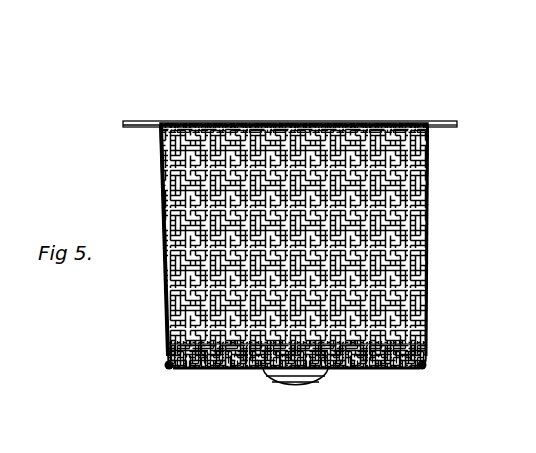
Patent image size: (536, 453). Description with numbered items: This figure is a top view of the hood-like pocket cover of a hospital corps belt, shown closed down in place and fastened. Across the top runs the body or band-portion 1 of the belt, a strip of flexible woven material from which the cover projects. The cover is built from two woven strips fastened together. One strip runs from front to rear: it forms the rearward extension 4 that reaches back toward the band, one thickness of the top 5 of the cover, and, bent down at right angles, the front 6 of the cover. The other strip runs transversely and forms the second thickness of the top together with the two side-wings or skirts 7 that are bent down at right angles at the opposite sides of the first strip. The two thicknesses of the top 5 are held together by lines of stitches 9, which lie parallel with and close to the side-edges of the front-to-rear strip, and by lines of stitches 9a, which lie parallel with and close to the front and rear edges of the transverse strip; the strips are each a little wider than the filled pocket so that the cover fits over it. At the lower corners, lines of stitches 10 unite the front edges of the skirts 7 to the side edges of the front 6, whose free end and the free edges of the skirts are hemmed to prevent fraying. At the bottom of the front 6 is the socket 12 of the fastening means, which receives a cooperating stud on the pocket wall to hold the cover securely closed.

The body or band-portion 1 is at (436, 116).
The rearward extension 4 is at (421, 121).
The top of the cover 5 is at (422, 286).
The front of the cover 6 is at (227, 365).
The side-portions, wings, or skirts 7 is at (154, 183).
The lines of stitches 9 is at (158, 287).
The lines of stitches 9a is at (326, 130).
The lines of stitches 10 is at (161, 357).
The socket 12 is at (288, 381).